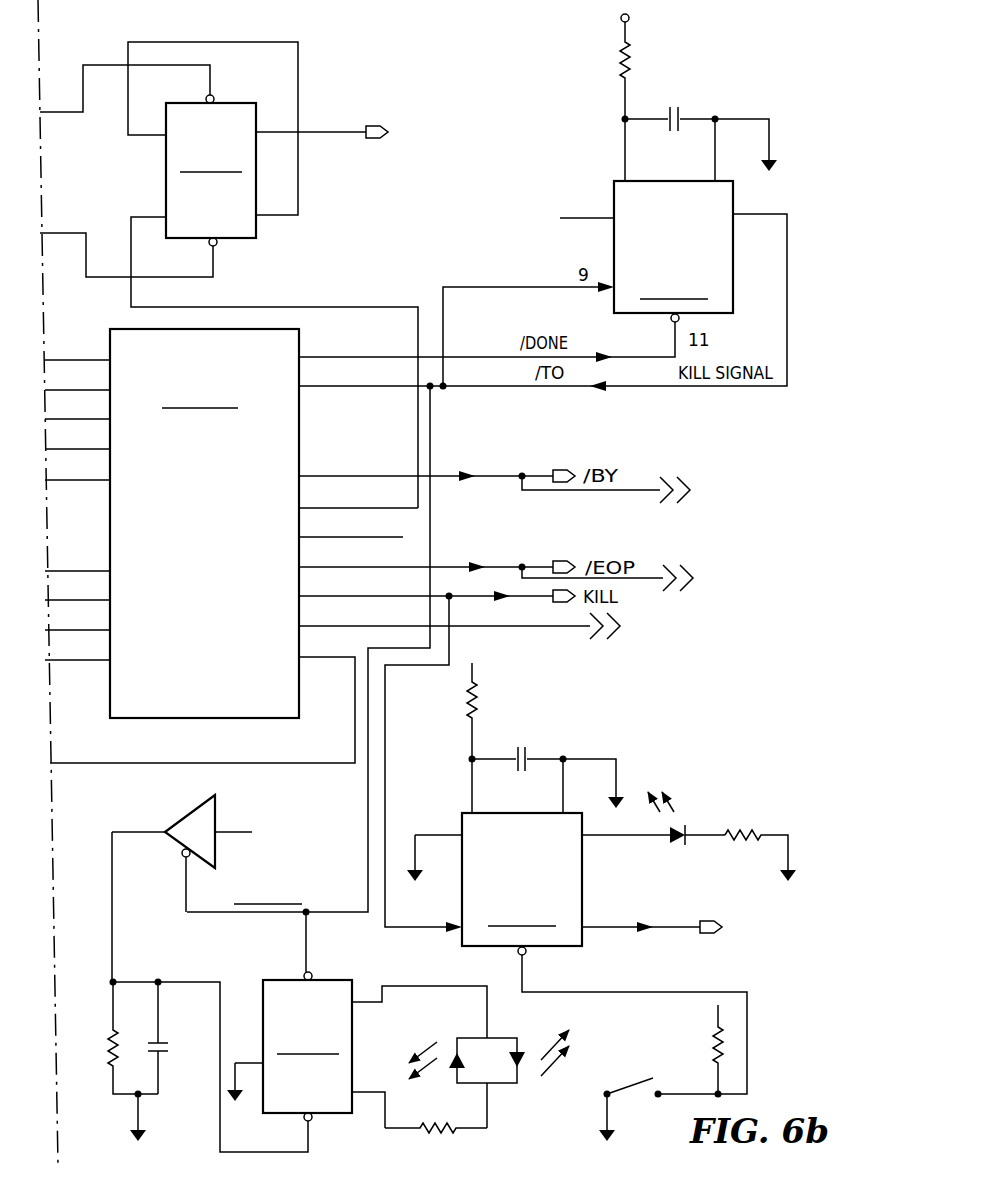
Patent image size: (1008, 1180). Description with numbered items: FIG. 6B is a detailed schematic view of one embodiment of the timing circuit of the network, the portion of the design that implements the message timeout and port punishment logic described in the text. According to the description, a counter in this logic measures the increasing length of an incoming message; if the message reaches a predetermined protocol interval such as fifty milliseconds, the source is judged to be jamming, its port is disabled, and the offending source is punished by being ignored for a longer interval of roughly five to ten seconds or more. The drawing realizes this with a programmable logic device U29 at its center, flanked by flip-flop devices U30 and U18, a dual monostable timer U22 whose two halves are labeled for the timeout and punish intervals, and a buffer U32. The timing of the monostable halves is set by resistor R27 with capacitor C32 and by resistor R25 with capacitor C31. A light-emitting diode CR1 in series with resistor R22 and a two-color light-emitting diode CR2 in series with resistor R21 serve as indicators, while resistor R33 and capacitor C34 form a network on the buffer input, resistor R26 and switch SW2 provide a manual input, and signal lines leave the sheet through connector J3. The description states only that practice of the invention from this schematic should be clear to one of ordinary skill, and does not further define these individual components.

The 74HC74 flip-flop U30 is at (255, 275).
The PAL16L3L programmable logic U29 (TIME 3.3) U29 is at (416, 488).
The 74LS123 dual monostable U22 (timeout 50 ms / punish 5000 ms) U22 is at (602, 622).
The 74LS125 buffer U32 is at (207, 888).
The 74HC74 flip-flop U18 is at (300, 1053).
The resistor R27 240 kΩ R27 is at (594, 90).
The capacitor C32 47 µF C32 is at (700, 121).
The resistor R25 240 kΩ R25 is at (438, 738).
The capacitor C31 47 µF C31 is at (547, 758).
The red LED CR1 is at (653, 797).
The resistor R22 220 Ω R22 is at (759, 831).
The resistor R33 2 kΩ R33 is at (111, 1060).
The capacitor C34 10 µF C34 is at (179, 1044).
The bicolor LED CR2 (green/red) CR2 is at (477, 1070).
The resistor R21 270 Ω R21 is at (436, 1130).
The resistor R26 4.7 kΩ R26 is at (686, 1051).
The switch SW2 is at (632, 1101).
The connector J3 is at (636, 569).